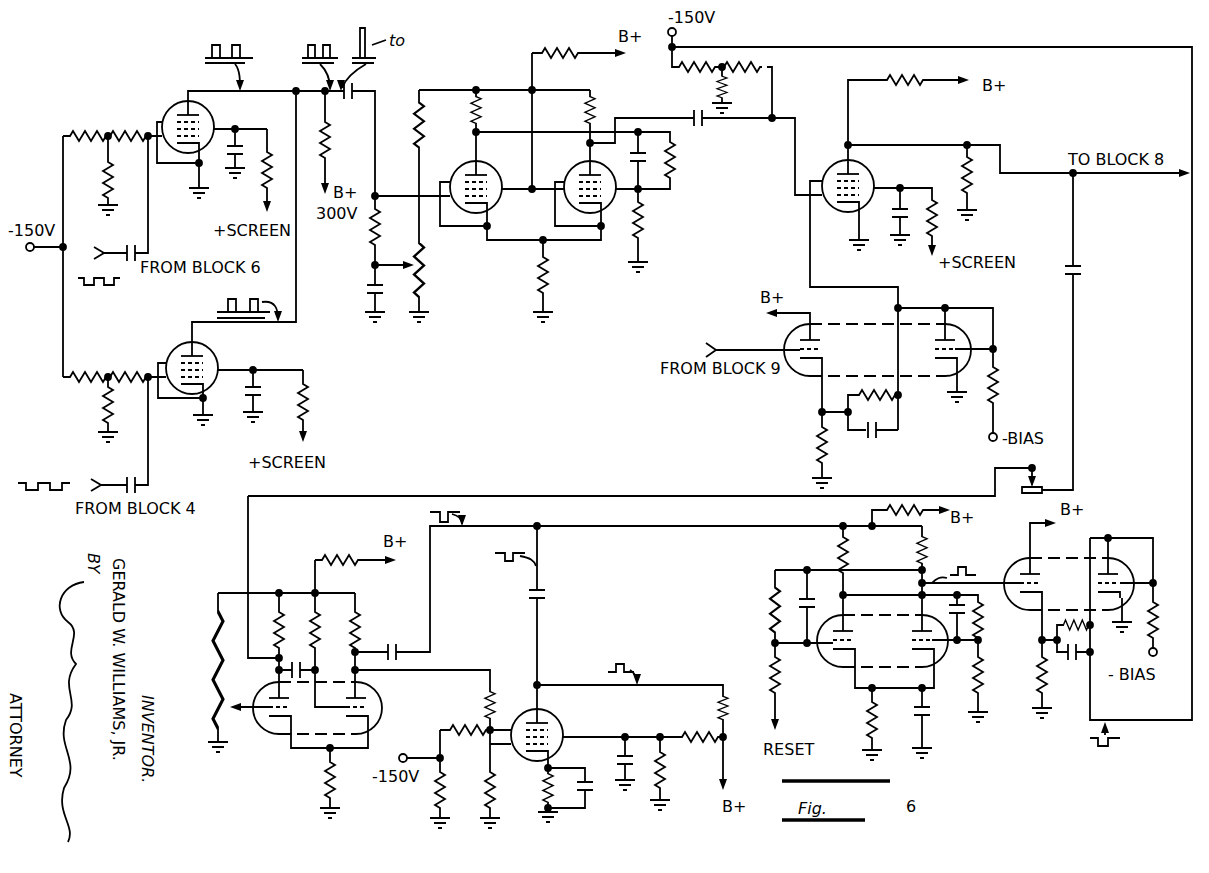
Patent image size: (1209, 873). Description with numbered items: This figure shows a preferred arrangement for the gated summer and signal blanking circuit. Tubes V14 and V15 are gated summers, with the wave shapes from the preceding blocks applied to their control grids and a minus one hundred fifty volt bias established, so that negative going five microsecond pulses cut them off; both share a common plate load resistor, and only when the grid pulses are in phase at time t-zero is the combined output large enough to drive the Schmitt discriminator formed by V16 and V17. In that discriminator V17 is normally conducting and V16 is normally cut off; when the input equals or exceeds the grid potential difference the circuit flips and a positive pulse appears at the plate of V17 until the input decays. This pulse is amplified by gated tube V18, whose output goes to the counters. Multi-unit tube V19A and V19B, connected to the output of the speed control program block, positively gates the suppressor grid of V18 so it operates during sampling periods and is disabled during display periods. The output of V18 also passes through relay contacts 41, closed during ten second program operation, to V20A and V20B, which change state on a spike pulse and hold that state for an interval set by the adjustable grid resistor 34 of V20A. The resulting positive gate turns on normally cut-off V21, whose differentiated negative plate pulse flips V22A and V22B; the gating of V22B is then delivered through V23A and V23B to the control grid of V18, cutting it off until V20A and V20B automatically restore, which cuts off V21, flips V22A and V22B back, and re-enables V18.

The gated summer tube V14 is at (213, 350).
The gated summer tube V15 is at (207, 110).
The Schmitt discriminator tube V16 is at (483, 162).
The Schmitt discriminator tube V17 is at (580, 162).
The gated amplifier tube V18 is at (867, 183).
The multi-unit tube section V19A is at (825, 337).
The multi-unit tube section V19B is at (938, 360).
The multi-unit tube section V20A is at (258, 734).
The multi-unit tube section V20B is at (382, 708).
The gated tube V21 is at (555, 720).
The multi-unit tube section V22A is at (845, 667).
The multi-unit tube section V22B is at (916, 620).
The multi-unit tube section V23A is at (1010, 566).
The multi-unit tube section V23B is at (1100, 565).
The adjustable grid resistor 34 is at (223, 672).
The relay contacts 41 is at (1042, 478).